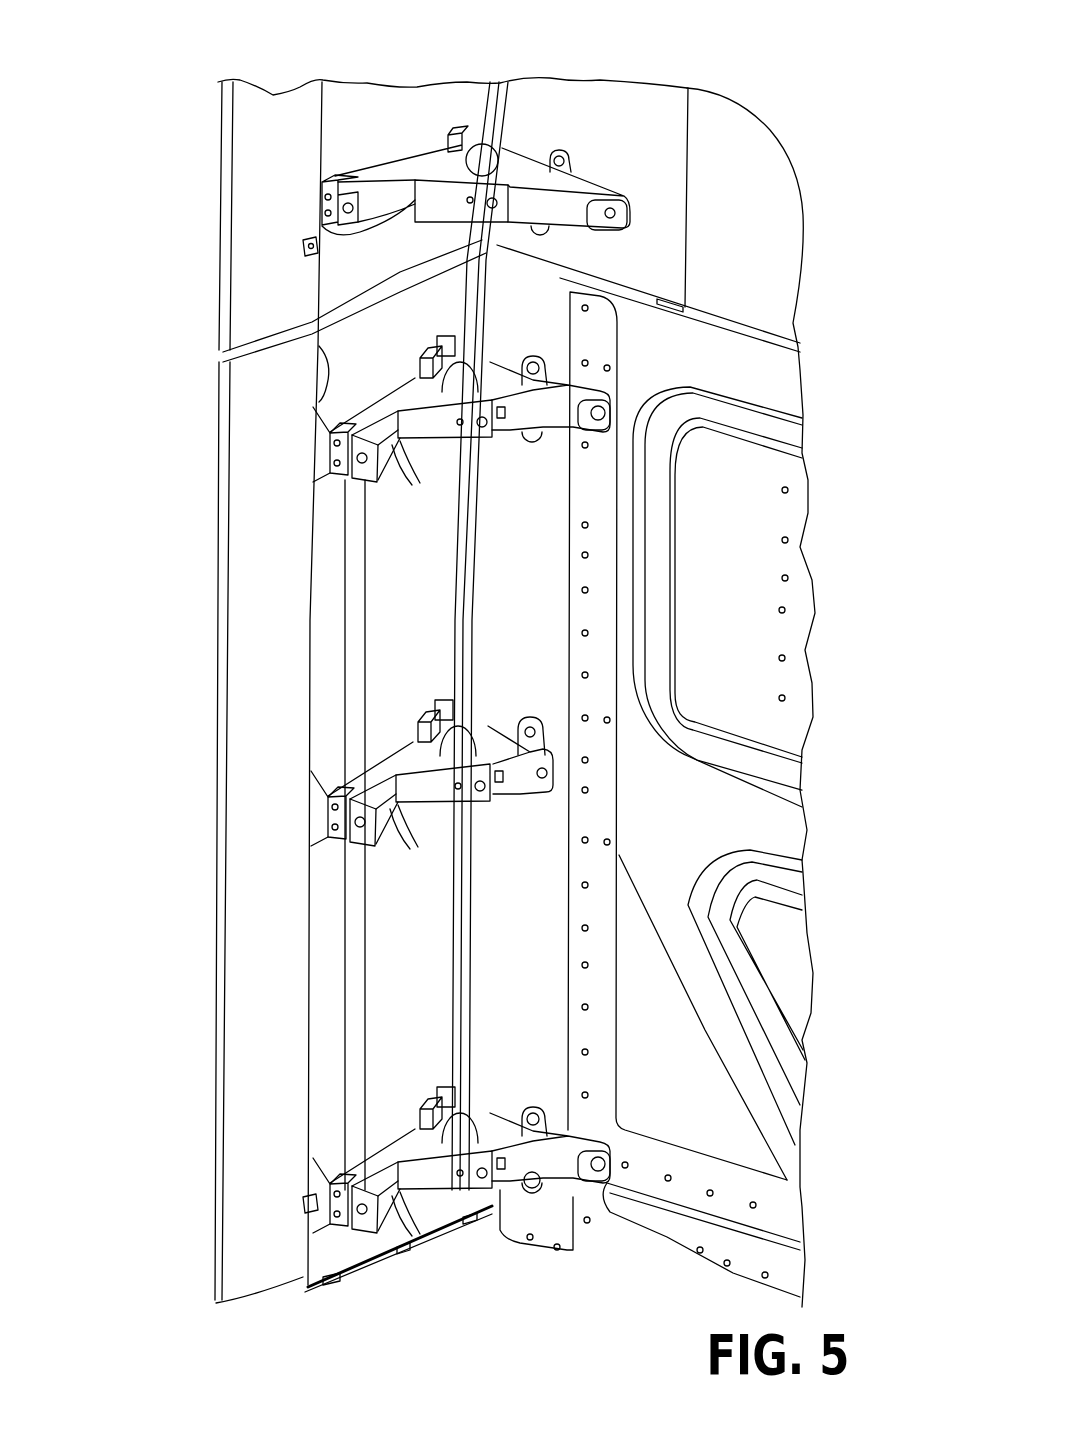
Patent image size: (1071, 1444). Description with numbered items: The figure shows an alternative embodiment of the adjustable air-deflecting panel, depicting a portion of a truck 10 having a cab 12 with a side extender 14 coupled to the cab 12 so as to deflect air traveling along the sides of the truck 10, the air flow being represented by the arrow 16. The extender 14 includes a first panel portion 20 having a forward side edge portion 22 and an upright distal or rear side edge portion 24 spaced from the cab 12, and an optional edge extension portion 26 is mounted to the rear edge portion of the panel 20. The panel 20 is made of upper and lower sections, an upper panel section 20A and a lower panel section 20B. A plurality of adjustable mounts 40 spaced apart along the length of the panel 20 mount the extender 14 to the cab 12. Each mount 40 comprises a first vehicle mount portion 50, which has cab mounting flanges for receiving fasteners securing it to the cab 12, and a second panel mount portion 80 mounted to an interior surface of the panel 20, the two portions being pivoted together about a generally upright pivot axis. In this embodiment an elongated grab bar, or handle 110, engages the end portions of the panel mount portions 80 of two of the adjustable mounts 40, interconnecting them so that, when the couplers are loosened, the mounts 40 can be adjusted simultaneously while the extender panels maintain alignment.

The truck 10 is at (512, 1267).
The cab 12 is at (672, 1217).
The side extender 14 is at (374, 68).
The arrow 16 is at (407, 1277).
The first panel portion 20 is at (347, 100).
The upper panel section 20A is at (352, 133).
The lower panel section 20B is at (302, 966).
The forward side edge portion 22 is at (474, 585).
The rear side edge portion 24 is at (330, 383).
The edge extension portion 26 is at (245, 283).
The adjustable mount 40 is at (593, 130).
The first vehicle mount portion 50 is at (552, 410).
The second panel mount portion 80 is at (400, 434).
The handle 110 is at (350, 1048).